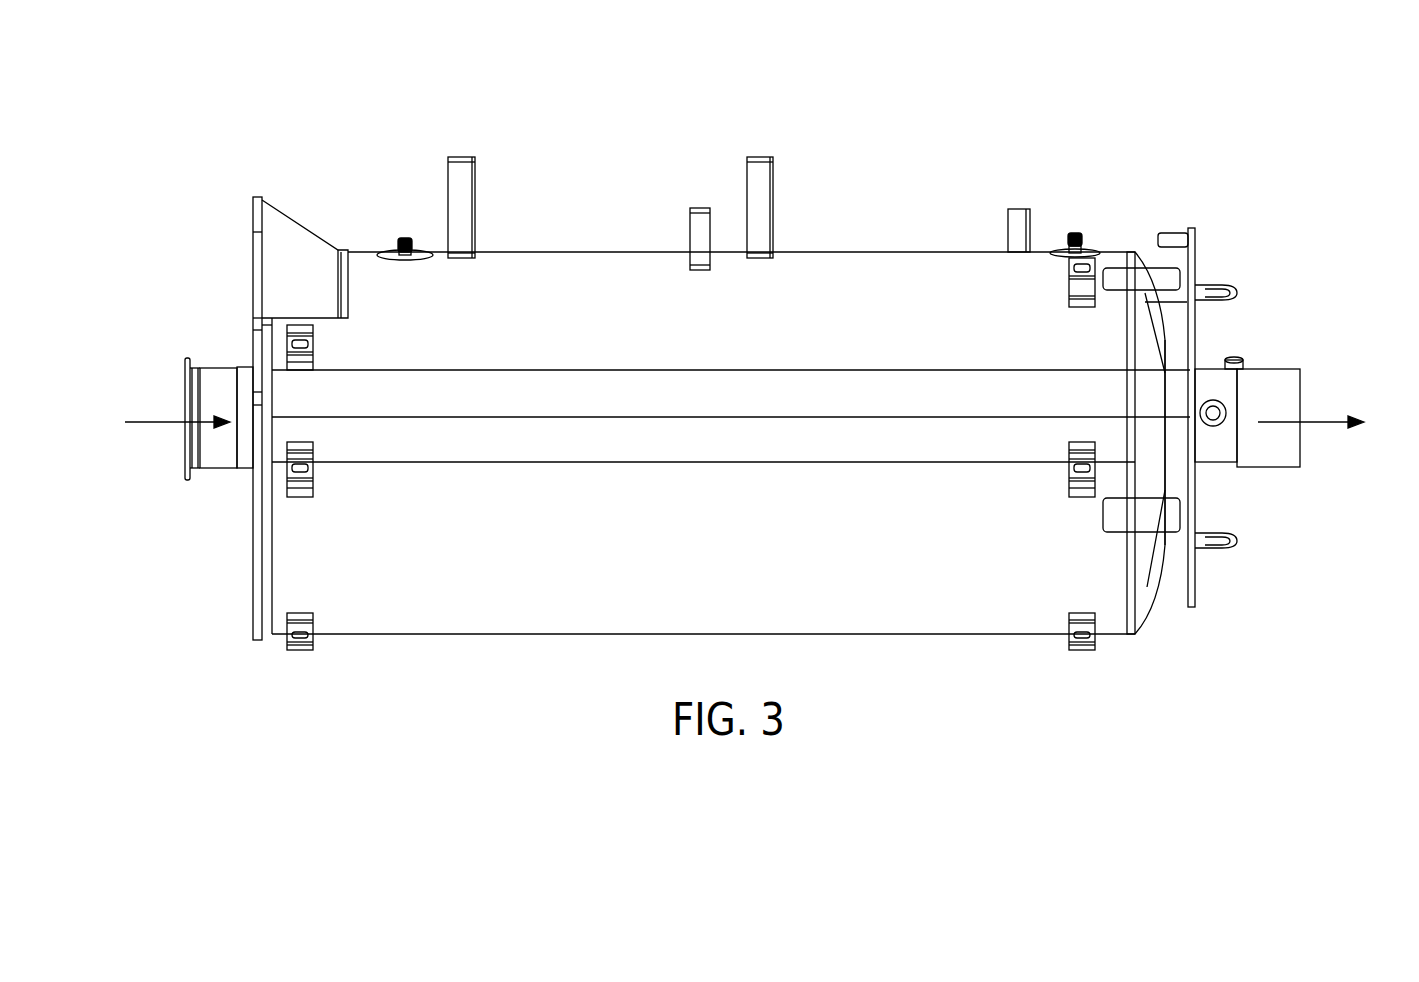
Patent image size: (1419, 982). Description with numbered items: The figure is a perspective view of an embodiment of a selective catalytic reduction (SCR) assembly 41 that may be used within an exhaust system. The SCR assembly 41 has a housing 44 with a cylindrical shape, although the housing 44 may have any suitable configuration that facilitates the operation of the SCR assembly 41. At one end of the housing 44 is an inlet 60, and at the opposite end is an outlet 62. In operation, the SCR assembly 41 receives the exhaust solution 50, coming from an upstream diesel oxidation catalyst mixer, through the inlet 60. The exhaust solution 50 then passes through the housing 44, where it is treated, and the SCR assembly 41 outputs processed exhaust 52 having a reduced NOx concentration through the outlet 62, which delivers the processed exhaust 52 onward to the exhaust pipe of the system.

The SCR assembly 41 is at (403, 97).
The housing 44 is at (908, 252).
The exhaust solution 50 is at (170, 422).
The processed exhaust 52 is at (1315, 422).
The inlet 60 is at (213, 470).
The outlet 62 is at (1272, 369).